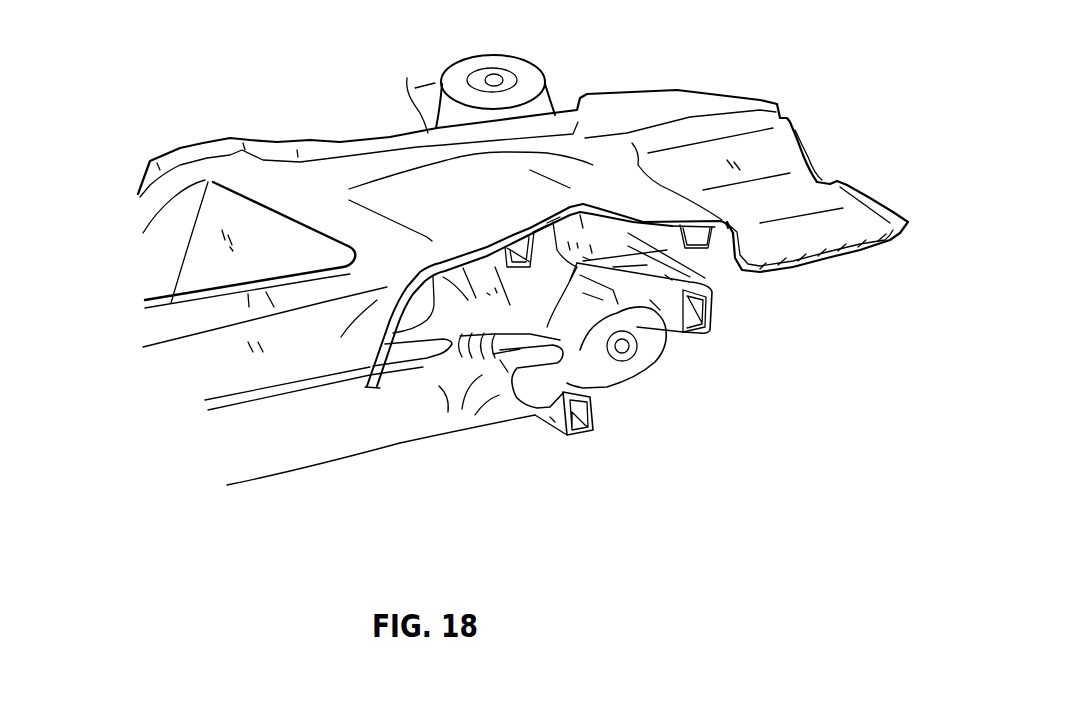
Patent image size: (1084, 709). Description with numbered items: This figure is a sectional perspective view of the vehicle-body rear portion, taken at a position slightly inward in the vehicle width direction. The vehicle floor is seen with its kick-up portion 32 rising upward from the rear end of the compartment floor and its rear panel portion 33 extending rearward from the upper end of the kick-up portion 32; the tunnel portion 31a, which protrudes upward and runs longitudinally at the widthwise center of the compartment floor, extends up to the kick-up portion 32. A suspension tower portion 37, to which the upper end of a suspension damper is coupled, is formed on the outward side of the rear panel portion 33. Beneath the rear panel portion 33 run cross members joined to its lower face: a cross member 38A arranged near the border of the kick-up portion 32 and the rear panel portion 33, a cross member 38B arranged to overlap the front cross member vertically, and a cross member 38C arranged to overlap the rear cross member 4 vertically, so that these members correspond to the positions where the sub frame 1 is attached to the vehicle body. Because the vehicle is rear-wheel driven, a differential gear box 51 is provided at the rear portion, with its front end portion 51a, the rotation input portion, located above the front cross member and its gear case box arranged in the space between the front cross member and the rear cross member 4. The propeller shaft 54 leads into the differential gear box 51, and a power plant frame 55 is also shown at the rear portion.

The kick-up portion 32 is at (257, 230).
The tunnel portion 31a is at (160, 306).
The suspension tower portion 37 is at (517, 65).
The rear panel portion 33 is at (783, 147).
The cross member 38A is at (423, 307).
The cross member 38B is at (563, 230).
The cross member 38C is at (707, 250).
The rear cross member 4 is at (712, 305).
The differential gear box 51 is at (640, 363).
The front end portion 51a is at (512, 340).
The propeller shaft 54 is at (449, 357).
The sub frame 1 is at (558, 428).
The power plant frame 55 is at (303, 457).